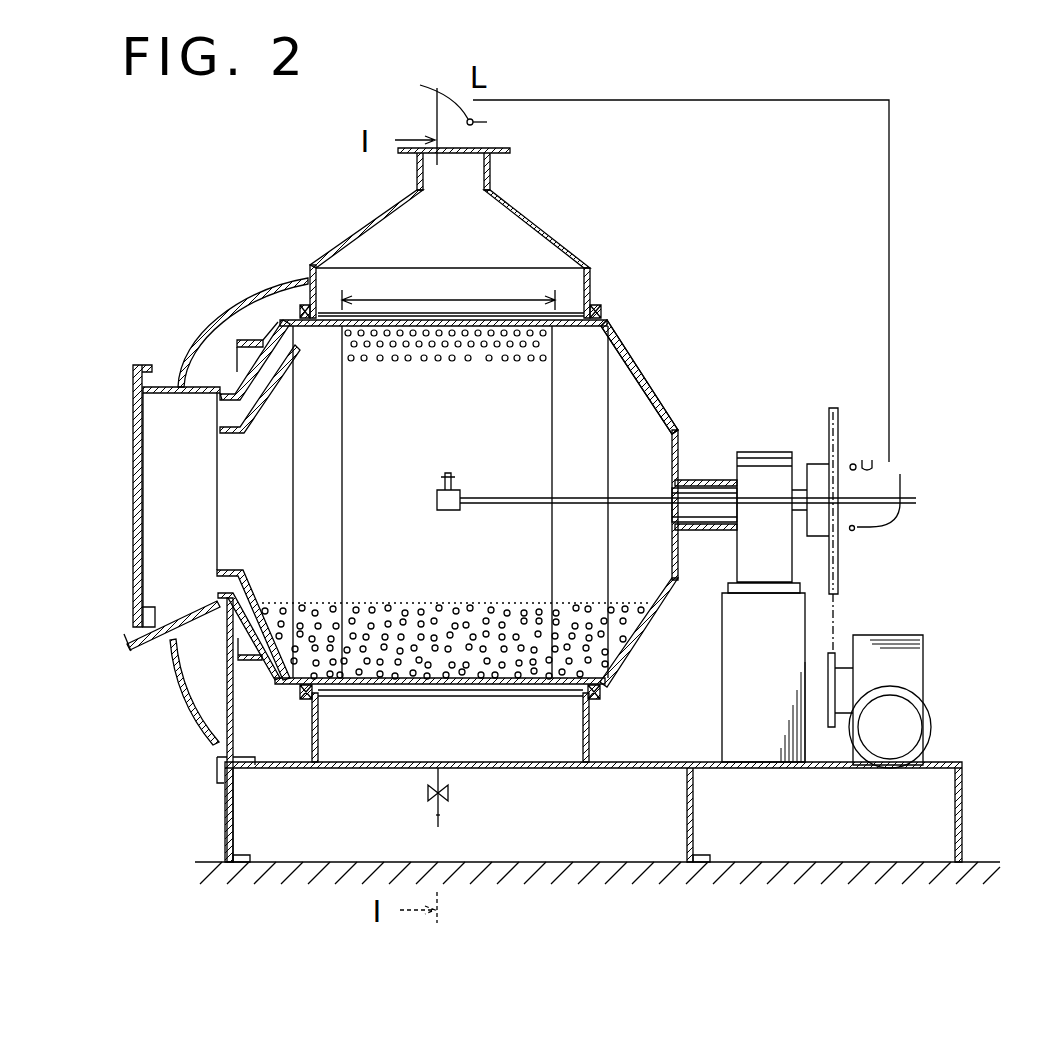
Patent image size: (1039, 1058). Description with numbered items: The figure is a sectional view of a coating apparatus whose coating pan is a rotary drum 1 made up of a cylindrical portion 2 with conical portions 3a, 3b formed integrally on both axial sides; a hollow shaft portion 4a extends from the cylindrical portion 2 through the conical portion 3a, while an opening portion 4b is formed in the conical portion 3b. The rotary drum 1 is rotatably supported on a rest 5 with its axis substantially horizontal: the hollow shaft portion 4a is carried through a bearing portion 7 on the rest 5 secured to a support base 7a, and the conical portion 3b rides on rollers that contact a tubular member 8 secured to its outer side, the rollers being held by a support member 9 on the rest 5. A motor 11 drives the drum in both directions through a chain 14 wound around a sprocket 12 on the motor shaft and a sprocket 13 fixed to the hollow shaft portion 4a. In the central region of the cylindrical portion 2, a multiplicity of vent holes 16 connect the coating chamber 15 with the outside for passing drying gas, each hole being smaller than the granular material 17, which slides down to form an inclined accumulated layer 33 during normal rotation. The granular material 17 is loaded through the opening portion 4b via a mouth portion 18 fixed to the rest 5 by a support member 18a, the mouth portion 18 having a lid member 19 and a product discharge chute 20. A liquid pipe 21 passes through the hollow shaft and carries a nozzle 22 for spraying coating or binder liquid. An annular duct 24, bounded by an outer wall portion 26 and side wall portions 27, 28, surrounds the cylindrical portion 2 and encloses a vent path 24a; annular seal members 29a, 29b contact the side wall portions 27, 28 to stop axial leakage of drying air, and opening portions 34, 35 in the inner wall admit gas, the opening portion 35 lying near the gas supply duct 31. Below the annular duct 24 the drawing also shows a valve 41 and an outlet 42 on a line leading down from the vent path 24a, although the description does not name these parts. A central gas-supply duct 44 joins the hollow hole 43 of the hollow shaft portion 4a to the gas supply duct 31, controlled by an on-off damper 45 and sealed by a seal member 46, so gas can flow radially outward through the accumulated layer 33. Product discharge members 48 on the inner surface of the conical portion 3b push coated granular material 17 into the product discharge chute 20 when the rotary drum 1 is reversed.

The rotary drum 1 is at (641, 334).
The cylindrical portion 2 is at (575, 330).
The conical portion 3a is at (648, 370).
The conical portion 3b is at (262, 340).
The hollow shaft portion 4a is at (700, 479).
The opening portion 4b is at (226, 490).
The rest 5 is at (965, 830).
The bearing portion 7 is at (772, 452).
The support base 7a is at (731, 648).
The tubular member 8 is at (226, 663).
The support member 9 is at (234, 708).
The motor 11 is at (915, 668).
The sprocket 12 is at (828, 690).
The sprocket 13 is at (840, 565).
The chain 14 is at (836, 612).
The coating chamber 15 is at (470, 509).
The vent holes 16 is at (512, 692).
The granular material 17 is at (463, 606).
The mouth portion 18 is at (155, 565).
The support member 18a is at (200, 690).
The lid member 19 is at (133, 445).
The product discharge chute 20 is at (155, 660).
The liquid pipe 21 is at (470, 506).
The nozzle 22 is at (456, 479).
The annular duct 24 is at (613, 716).
The vent path 24a is at (450, 723).
The outer wall portion 26 is at (463, 770).
The side wall portion 27 is at (589, 760).
The side wall portion 28 is at (312, 730).
The annular seal member 29a is at (600, 304).
The annular seal member 29b is at (305, 304).
The gas supply duct 31 is at (484, 178).
The accumulated layer 33 is at (358, 601).
The opening portion 34 is at (416, 690).
The opening portion 35 is at (473, 320).
The valve 41 is at (426, 793).
The drain outlet 42 is at (437, 820).
The hollow hole 43 is at (700, 522).
The central gas-supply duct 44 is at (890, 300).
The on-off damper 45 is at (430, 99).
The seal member 46 is at (858, 465).
The product discharge members 48 is at (244, 570).